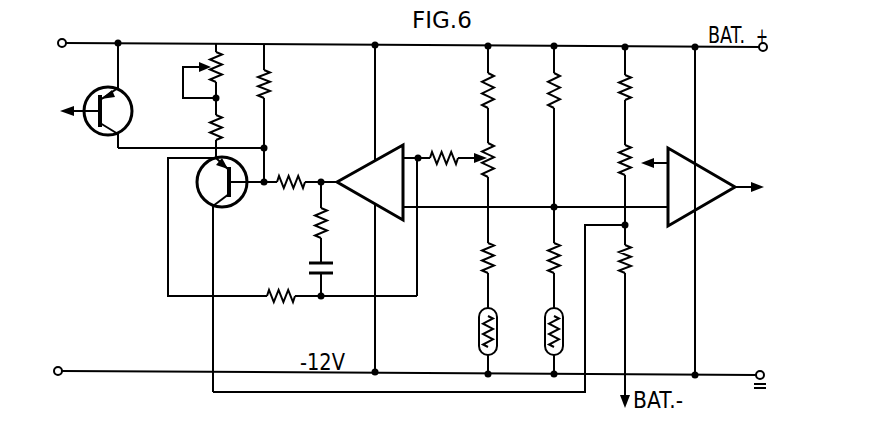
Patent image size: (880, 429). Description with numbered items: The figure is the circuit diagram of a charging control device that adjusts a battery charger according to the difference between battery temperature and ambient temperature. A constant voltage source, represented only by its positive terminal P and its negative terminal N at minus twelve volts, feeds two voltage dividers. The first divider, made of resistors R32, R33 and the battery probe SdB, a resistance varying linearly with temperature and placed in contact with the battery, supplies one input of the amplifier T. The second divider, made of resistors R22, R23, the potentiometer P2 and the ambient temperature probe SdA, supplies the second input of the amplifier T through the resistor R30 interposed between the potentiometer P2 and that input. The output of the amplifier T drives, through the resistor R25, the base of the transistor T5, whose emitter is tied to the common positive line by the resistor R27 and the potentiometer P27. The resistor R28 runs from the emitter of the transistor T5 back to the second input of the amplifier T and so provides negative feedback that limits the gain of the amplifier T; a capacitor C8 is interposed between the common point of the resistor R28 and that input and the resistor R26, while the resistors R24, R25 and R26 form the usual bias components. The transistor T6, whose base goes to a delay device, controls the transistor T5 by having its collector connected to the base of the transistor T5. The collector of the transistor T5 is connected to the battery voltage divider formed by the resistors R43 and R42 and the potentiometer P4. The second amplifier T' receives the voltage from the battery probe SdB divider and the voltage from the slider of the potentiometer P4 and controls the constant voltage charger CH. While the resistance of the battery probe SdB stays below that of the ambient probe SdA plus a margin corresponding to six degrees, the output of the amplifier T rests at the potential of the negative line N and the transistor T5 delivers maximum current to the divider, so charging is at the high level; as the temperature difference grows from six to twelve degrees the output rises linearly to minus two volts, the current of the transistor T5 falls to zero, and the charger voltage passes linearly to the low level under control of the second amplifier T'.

The transistor T6 is at (97, 91).
The potentiometer P27 is at (226, 80).
The resistor R27 is at (213, 130).
The resistor R24 is at (270, 94).
The transistor T5 is at (205, 190).
The resistor R25 is at (284, 173).
The resistor R26 is at (317, 222).
The capacitor C8 is at (331, 263).
The resistor R28 is at (273, 307).
The amplifier T is at (502, 175).
The resistor R30 is at (460, 141).
The resistor R22 is at (486, 90).
The potentiometer P2 is at (493, 167).
The resistor R23 is at (485, 264).
The ambient temperature probe SdA is at (477, 338).
The resistor R32 is at (554, 90).
The resistor R33 is at (555, 264).
The battery probe SdB is at (552, 338).
The resistor R42 is at (622, 85).
The potentiometer P4 is at (625, 164).
The resistor R43 is at (632, 266).
The second amplifier T' is at (716, 211).
The constant voltage charger CH is at (761, 174).
The positive terminal P is at (762, 70).
The negative terminal N is at (760, 355).